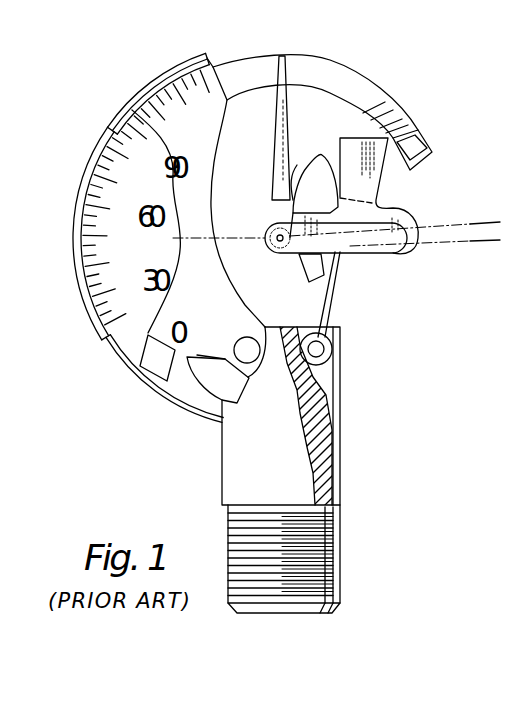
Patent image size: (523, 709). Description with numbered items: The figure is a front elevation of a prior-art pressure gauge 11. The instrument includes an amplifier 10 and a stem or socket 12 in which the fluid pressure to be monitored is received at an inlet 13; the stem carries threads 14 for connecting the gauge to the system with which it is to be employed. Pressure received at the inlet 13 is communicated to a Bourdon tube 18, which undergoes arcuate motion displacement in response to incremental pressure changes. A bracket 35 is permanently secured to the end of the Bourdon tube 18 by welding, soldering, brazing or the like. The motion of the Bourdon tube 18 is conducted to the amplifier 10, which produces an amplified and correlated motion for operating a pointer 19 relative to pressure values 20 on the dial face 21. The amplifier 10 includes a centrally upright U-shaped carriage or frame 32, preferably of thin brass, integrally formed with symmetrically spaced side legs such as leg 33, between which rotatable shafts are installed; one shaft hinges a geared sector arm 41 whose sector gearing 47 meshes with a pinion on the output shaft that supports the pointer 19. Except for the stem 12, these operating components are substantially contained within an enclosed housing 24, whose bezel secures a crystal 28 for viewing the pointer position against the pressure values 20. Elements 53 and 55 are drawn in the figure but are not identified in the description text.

The amplifier 10 is at (390, 254).
The pressure gauge 11 is at (100, 108).
The stem or socket 12 is at (225, 462).
The inlet 13 is at (297, 613).
The threads 14 is at (340, 553).
The Bourdon tube 18 is at (333, 70).
The pointer 19 is at (270, 80).
The pressure values 20 is at (183, 153).
The dial face 21 is at (147, 380).
The enclosed housing 24 is at (108, 350).
The crystal 28 is at (522, 262).
The carriage or frame 32 is at (347, 262).
The side leg 33 is at (377, 177).
The bracket 35 is at (428, 130).
The geared sector arm 41 is at (328, 201).
The sector gearing 47 is at (297, 173).
The body wall 53 is at (340, 452).
The spring 55 is at (303, 325).